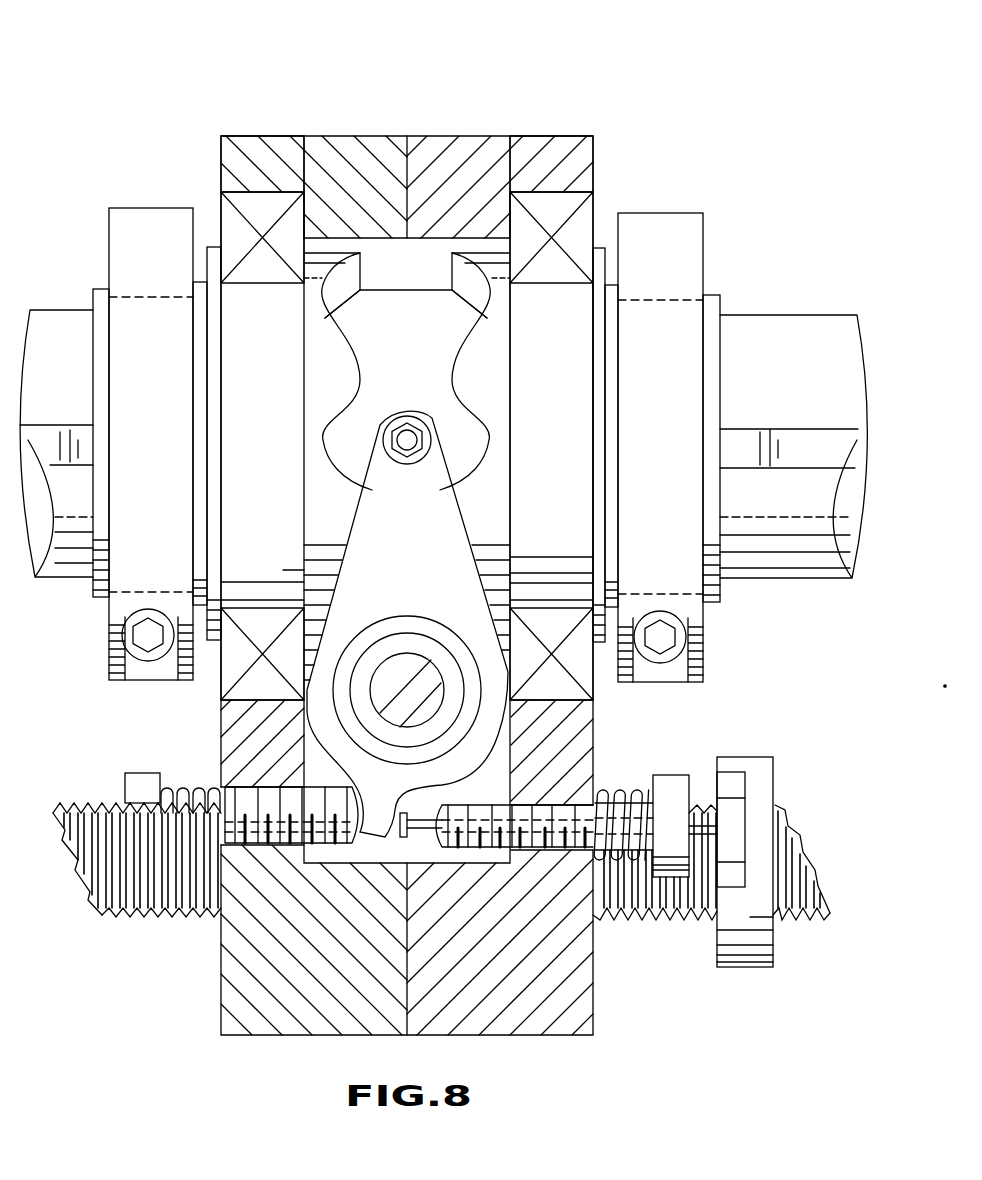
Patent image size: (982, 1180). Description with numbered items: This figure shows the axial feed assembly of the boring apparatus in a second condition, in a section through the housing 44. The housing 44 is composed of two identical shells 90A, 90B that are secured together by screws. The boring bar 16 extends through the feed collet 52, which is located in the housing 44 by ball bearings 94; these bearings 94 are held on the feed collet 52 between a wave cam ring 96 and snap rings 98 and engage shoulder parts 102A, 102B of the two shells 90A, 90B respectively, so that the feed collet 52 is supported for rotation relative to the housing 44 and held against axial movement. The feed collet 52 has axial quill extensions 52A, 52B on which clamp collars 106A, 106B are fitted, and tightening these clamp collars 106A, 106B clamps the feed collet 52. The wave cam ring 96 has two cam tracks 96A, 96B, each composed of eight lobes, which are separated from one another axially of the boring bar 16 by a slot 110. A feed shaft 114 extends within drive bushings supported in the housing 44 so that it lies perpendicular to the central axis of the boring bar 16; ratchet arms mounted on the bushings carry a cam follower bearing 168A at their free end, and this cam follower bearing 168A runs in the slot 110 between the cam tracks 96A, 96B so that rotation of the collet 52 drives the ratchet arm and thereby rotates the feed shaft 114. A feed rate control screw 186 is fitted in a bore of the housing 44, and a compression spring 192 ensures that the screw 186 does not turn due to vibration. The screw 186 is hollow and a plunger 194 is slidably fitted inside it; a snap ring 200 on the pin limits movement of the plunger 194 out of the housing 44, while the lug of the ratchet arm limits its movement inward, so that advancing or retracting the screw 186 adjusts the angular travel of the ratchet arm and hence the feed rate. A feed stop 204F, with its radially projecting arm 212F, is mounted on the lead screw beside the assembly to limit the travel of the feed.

The housing 44 is at (410, 108).
The shell 90A is at (249, 136).
The shell 90B is at (563, 136).
The shoulder part 102A is at (318, 212).
The shoulder part 102B is at (495, 212).
The clamp collar 106A is at (373, 487).
The clamp collar 106B is at (660, 213).
The axial quill extension 52A is at (93, 289).
The axial quill extension 52B is at (720, 295).
The boring bar 16 is at (835, 315).
The slot 110 is at (430, 266).
The wave cam ring 96 is at (325, 366).
The cam track 96A is at (340, 293).
The cam track 96B is at (468, 294).
The ball bearings 94 is at (553, 275).
The feed collet 52 is at (565, 410).
The snap rings 98 is at (205, 445).
The cam follower bearing 168A is at (407, 468).
The feed shaft 114 is at (418, 650).
The snap ring 200 is at (395, 850).
The feed rate control screw 186 is at (485, 858).
The compression spring 192 is at (640, 790).
The plunger 194 is at (697, 808).
The arm 212F is at (748, 810).
The feed stop 204F is at (748, 968).